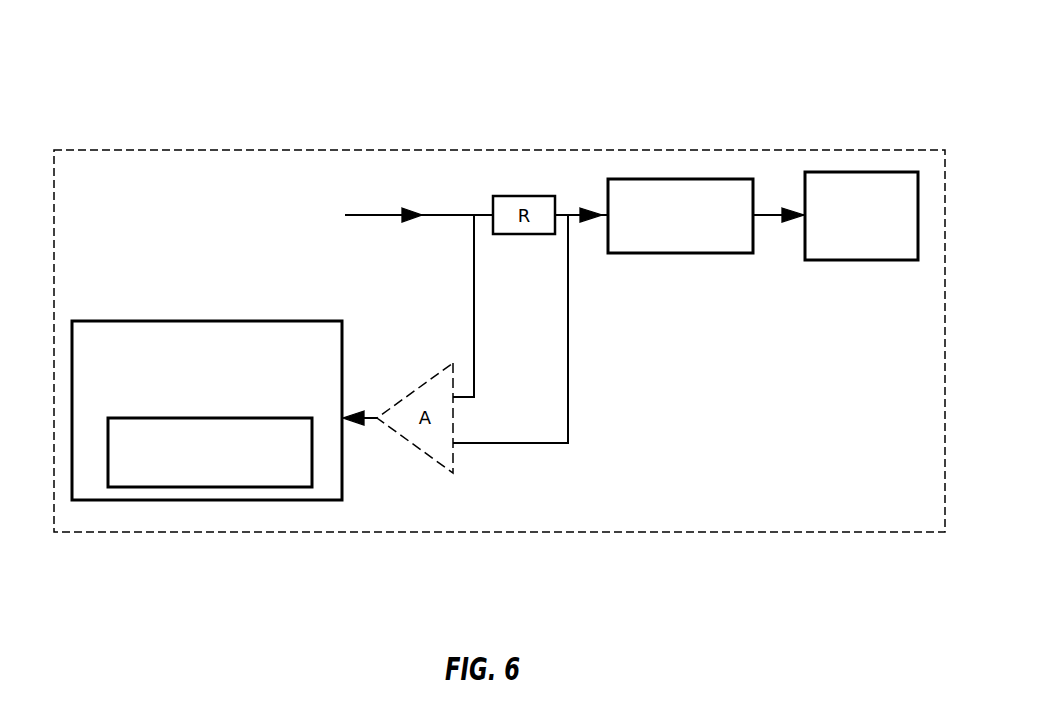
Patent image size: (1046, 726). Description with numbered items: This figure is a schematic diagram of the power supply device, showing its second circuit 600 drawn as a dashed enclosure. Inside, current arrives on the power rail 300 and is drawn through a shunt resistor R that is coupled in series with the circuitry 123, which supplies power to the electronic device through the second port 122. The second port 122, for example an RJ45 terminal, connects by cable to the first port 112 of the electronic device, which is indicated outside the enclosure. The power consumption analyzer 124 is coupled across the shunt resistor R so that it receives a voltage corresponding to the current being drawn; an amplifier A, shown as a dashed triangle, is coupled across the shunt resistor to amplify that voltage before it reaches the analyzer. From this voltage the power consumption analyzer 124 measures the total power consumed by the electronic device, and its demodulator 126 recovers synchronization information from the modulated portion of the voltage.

The first port 112 is at (372, 88).
The second circuit 600 is at (607, 148).
The power rail 300 is at (369, 214).
The circuitry 123 is at (662, 238).
The second port 122 is at (877, 248).
The power consumption analyzer 124 is at (192, 406).
The demodulator 126 is at (192, 474).